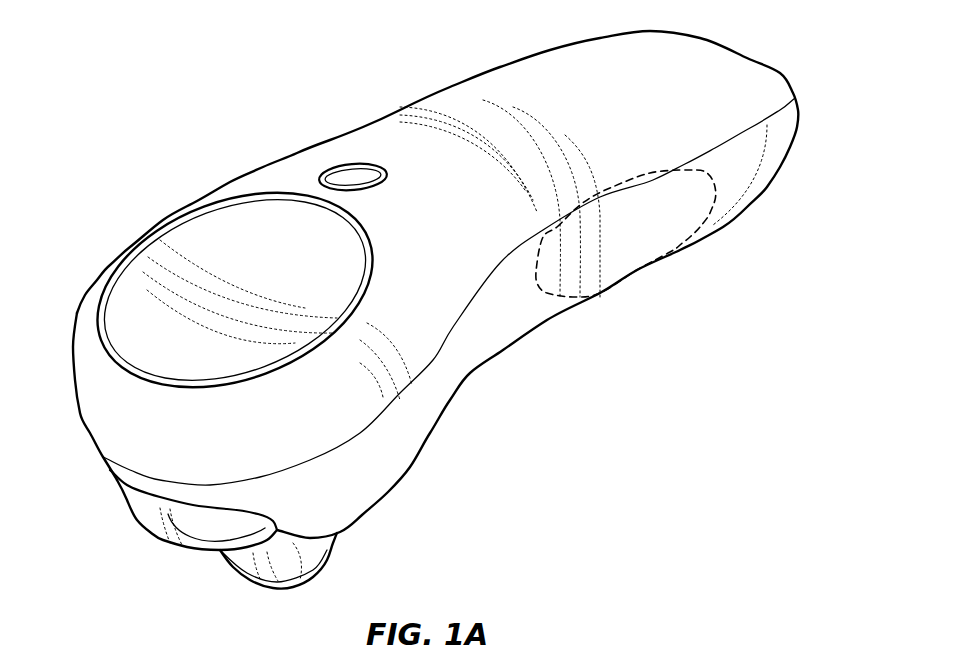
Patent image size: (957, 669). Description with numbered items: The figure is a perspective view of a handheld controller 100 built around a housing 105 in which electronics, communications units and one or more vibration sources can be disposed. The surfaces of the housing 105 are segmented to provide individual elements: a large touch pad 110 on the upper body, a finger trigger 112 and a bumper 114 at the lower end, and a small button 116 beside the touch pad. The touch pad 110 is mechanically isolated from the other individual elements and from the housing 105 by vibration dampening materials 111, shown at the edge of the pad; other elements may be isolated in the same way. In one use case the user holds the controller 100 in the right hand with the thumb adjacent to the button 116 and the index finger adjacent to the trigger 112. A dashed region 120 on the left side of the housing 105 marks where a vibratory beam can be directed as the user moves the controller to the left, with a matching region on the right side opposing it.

The handheld controller 100 is at (210, 72).
The housing 105 is at (619, 101).
The touch pad 110 is at (245, 270).
The vibration dampening materials 111 is at (185, 383).
The finger trigger 112 is at (273, 590).
The bumper 114 is at (142, 527).
The button 116 is at (377, 170).
The region 120 is at (614, 236).